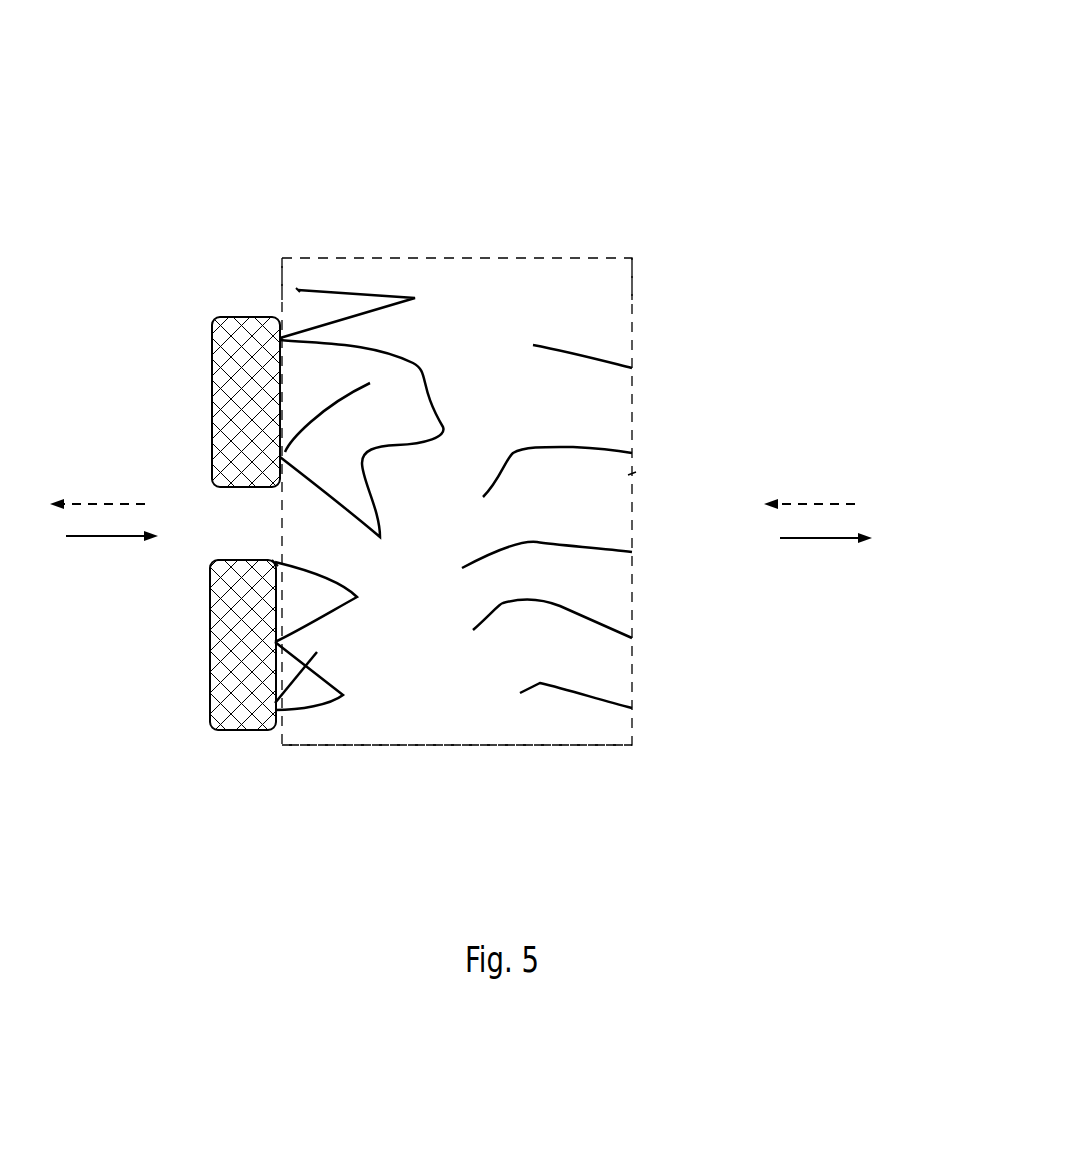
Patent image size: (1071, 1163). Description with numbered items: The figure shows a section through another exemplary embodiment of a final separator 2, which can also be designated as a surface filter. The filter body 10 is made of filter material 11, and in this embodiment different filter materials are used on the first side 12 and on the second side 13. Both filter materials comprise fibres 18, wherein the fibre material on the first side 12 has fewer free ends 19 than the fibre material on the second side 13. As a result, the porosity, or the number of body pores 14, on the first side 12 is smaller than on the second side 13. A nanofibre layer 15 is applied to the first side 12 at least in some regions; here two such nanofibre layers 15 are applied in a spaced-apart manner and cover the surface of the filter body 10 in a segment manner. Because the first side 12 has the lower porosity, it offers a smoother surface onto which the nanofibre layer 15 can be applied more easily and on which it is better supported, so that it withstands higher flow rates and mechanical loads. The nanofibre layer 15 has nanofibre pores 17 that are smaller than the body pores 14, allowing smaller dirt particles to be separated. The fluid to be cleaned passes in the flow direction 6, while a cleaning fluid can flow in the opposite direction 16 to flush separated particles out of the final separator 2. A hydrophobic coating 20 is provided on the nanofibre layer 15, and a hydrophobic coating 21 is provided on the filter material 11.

The final separator 2 is at (666, 154).
The flow direction 6 is at (107, 540).
The filter body 10 is at (478, 236).
The filter material 11 is at (322, 723).
The first side 12 is at (282, 282).
The second side 13 is at (634, 283).
The body pores 14 is at (557, 313).
The nanofibre layer 15 is at (200, 381).
The direction 16 is at (105, 504).
The nanofibre pores 17 is at (213, 340).
The fibres 18 is at (403, 290).
The free ends 19 is at (300, 290).
The hydrophobic coating 20 is at (207, 683).
The hydrophobic coating 21 is at (628, 475).